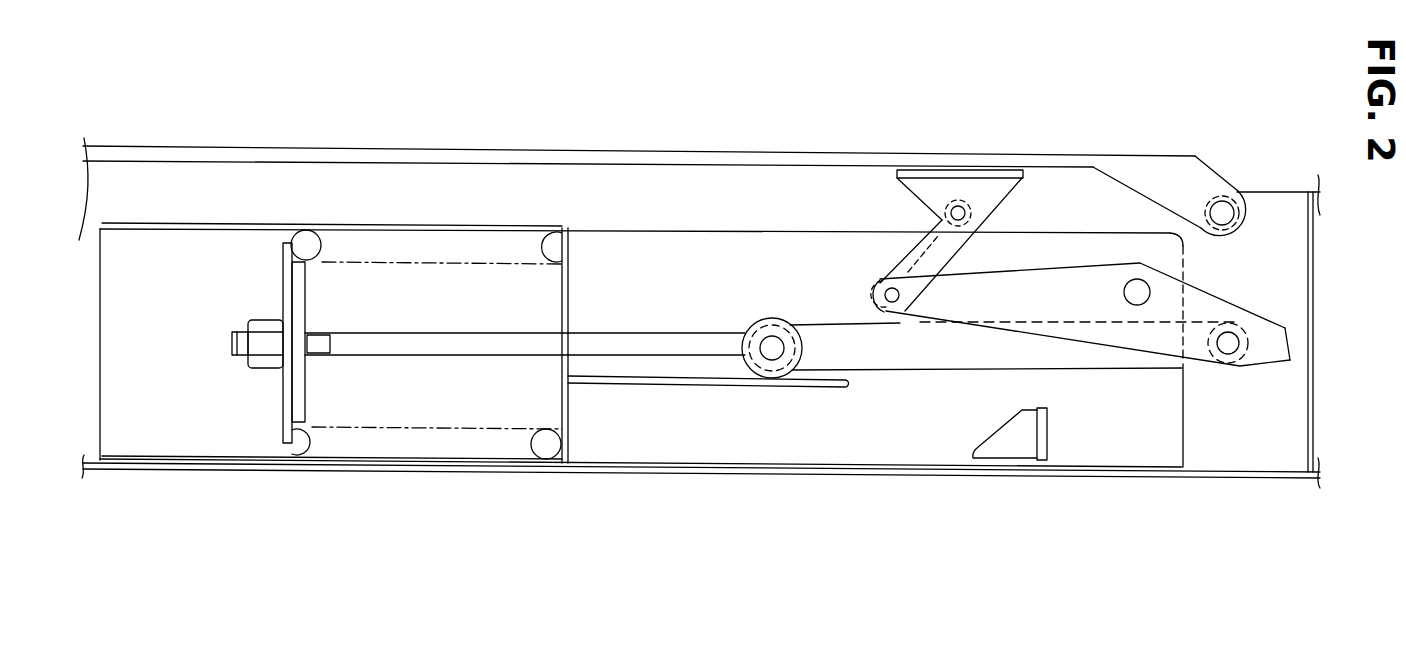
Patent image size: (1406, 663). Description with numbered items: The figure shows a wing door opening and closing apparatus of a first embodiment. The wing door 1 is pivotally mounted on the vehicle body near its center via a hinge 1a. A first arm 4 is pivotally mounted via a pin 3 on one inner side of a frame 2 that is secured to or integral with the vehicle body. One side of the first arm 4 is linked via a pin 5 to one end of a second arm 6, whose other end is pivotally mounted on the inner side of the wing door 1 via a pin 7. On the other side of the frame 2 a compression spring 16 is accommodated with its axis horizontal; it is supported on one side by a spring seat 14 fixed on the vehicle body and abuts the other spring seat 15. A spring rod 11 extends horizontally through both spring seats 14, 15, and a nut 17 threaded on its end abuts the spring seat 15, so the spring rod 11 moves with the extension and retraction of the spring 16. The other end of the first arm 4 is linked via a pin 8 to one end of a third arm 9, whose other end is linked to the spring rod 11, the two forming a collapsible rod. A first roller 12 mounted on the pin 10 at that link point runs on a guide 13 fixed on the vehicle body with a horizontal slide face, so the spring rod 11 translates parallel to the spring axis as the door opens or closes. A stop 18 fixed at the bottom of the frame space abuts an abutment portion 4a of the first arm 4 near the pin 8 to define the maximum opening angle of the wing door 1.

The wing door 1 is at (432, 157).
The hinge 1a is at (1242, 168).
The frame 2 is at (171, 490).
The pin 3 is at (1135, 305).
The first arm 4 is at (1168, 367).
The abutment portion 4a is at (1275, 358).
The pin 5 is at (876, 297).
The second arm 6 is at (908, 247).
The pin 7 is at (968, 212).
The pin 8 is at (1233, 356).
The third arm 9 is at (935, 370).
The pin 10 is at (772, 336).
The spring rod 11 is at (668, 331).
The first roller 12 is at (751, 327).
The guide 13 is at (714, 388).
The spring seat 14 is at (568, 407).
The spring seat 15 is at (283, 393).
The spring 16 is at (550, 457).
The nut 17 is at (263, 321).
The stop 18 is at (1048, 437).